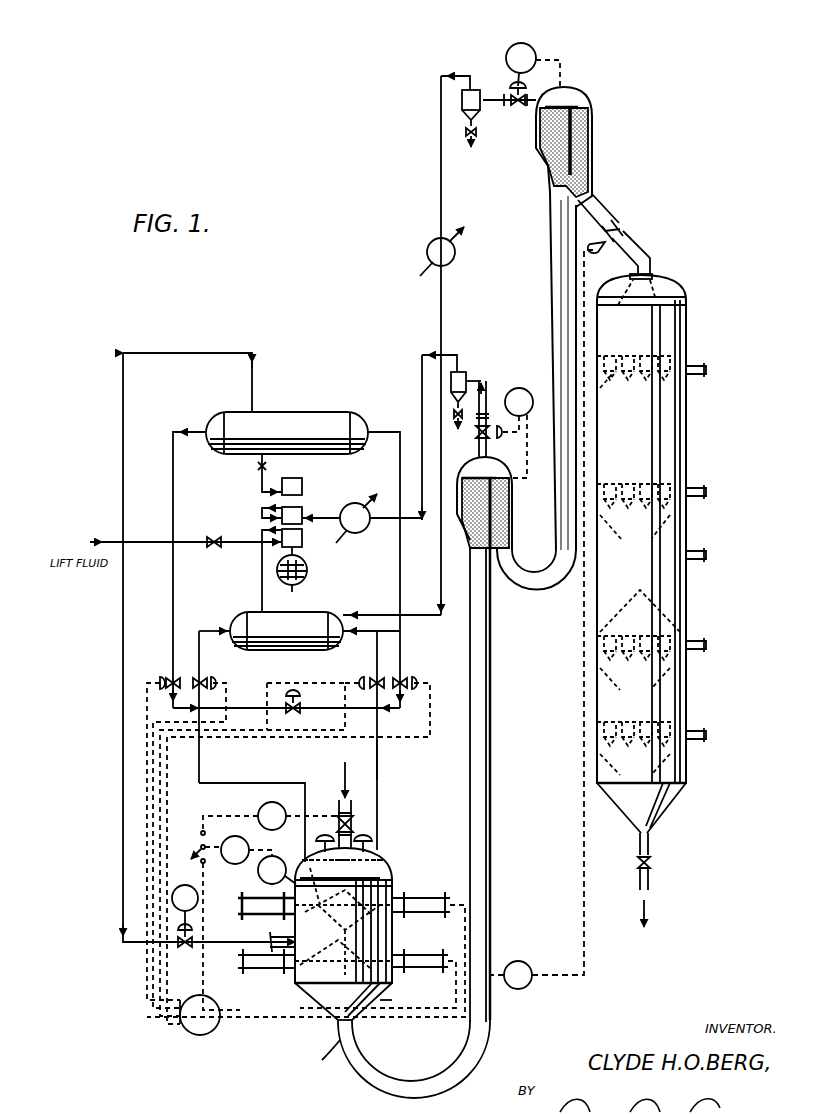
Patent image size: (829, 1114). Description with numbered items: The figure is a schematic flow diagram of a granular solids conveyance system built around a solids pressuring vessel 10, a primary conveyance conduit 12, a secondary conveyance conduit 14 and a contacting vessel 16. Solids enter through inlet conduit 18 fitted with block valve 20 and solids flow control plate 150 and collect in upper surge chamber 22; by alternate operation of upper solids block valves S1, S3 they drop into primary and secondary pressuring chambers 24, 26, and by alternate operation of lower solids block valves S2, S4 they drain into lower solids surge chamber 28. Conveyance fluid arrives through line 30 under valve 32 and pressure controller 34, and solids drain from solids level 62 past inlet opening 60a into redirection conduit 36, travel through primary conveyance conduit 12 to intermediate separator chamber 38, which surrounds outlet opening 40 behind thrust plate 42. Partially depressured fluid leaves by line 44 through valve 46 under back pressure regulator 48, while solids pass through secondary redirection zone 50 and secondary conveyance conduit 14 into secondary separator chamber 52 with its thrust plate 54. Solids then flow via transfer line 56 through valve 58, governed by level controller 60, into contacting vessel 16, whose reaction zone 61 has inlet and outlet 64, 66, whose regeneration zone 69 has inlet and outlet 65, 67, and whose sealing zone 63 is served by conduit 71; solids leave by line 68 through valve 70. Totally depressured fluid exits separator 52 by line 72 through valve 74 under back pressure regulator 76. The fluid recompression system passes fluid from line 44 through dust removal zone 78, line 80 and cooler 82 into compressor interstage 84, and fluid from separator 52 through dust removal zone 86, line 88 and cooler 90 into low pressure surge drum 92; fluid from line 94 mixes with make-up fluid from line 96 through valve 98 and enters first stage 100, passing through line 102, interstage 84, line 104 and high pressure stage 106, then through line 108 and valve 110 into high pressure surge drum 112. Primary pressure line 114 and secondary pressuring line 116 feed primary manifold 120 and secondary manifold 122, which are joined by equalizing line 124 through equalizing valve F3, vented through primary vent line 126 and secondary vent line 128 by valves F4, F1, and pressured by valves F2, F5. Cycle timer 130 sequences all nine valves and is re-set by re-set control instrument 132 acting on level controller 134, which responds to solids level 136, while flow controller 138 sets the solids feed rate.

The solids pressuring vessel 10 is at (393, 892).
The primary conveyance conduit 12 is at (491, 918).
The secondary conveyance conduit 14 is at (556, 312).
The contacting vessel 16 is at (660, 340).
The inlet conduit 18 is at (350, 812).
The block valve 20 is at (352, 820).
The upper surge chamber 22 is at (388, 875).
The primary pressuring chamber 24 is at (295, 930).
The secondary pressuring chamber 26 is at (372, 942).
The lower solids surge chamber 28 is at (350, 1020).
The line 30 is at (208, 358).
The valve 32 is at (182, 945).
The pressure controller 34 is at (198, 895).
The redirection conduit 36 is at (372, 1082).
The intermediate separator chamber 38 is at (500, 462).
The outlet opening 40 is at (478, 495).
The thrust plate 42 is at (468, 468).
The line 44 is at (488, 445).
The valve 46 is at (490, 418).
The back pressure regulator 48 is at (540, 380).
The secondary redirection zone 50 is at (528, 592).
The secondary separator chamber 52 is at (592, 110).
The thrust plate 54 is at (570, 96).
The transfer line 56 is at (598, 205).
The valve 58 is at (622, 230).
The level controller 60 is at (526, 964).
The inlet opening 60a is at (340, 1042).
The reaction zone 61 is at (645, 455).
The solids level 62 is at (316, 995).
The sealing zone 63 is at (662, 592).
The inlet 64 is at (706, 372).
The inlet 65 is at (705, 642).
The outlet 66 is at (706, 490).
The outlet 67 is at (706, 733).
The line 68 is at (650, 846).
The regeneration zone 69 is at (650, 700).
The valve 70 is at (652, 866).
The conduit 71 is at (705, 552).
The line 72 is at (512, 104).
The valve 74 is at (510, 86).
The back pressure regulator 76 is at (534, 50).
The dust removal zone 78 is at (466, 372).
The line 80 is at (421, 370).
The partially depressured conveyance fluid cooler 82 is at (353, 534).
The interstage 84 is at (302, 510).
The dust removal zone 86 is at (462, 100).
The line 88 is at (441, 122).
The cooler 90 is at (452, 258).
The low pressure conveyance fluid surge drum 92 is at (318, 625).
The line 94 is at (262, 585).
The line 96 is at (195, 536).
The valve 98 is at (213, 549).
The first stage 100 is at (278, 554).
The line 102 is at (264, 532).
The line 104 is at (262, 508).
The high pressure stage 106 is at (302, 484).
The line 108 is at (270, 488).
The valve 110 is at (256, 470).
The high pressure conveyance fluid surge drum 112 is at (287, 425).
The primary pressure line 114 is at (173, 462).
The secondary pressuring line 116 is at (400, 462).
The primary manifold 120 is at (270, 776).
The secondary manifold 122 is at (378, 764).
The equalizing line 124 is at (320, 700).
The primary vent line 126 is at (210, 621).
The secondary vent line 128 is at (377, 650).
The cycle timer 130 is at (188, 1014).
The re-set control instrument 132 is at (230, 844).
The level controller 134 is at (284, 858).
The solids level 136 is at (360, 862).
The flow controller 138 is at (258, 808).
The solids flow control plate 150 is at (365, 842).
The fluid valve F1 is at (369, 672).
The fluid valve F2 is at (160, 828).
The equalizing valve F3 is at (252, 849).
The fluid valve F4 is at (189, 832).
The fluid valve F5 is at (298, 840).
The upper solids block valve S1 is at (300, 896).
The lower solids block valve S2 is at (295, 985).
The upper solids block valve S3 is at (392, 918).
The lower solids block valve S4 is at (385, 996).